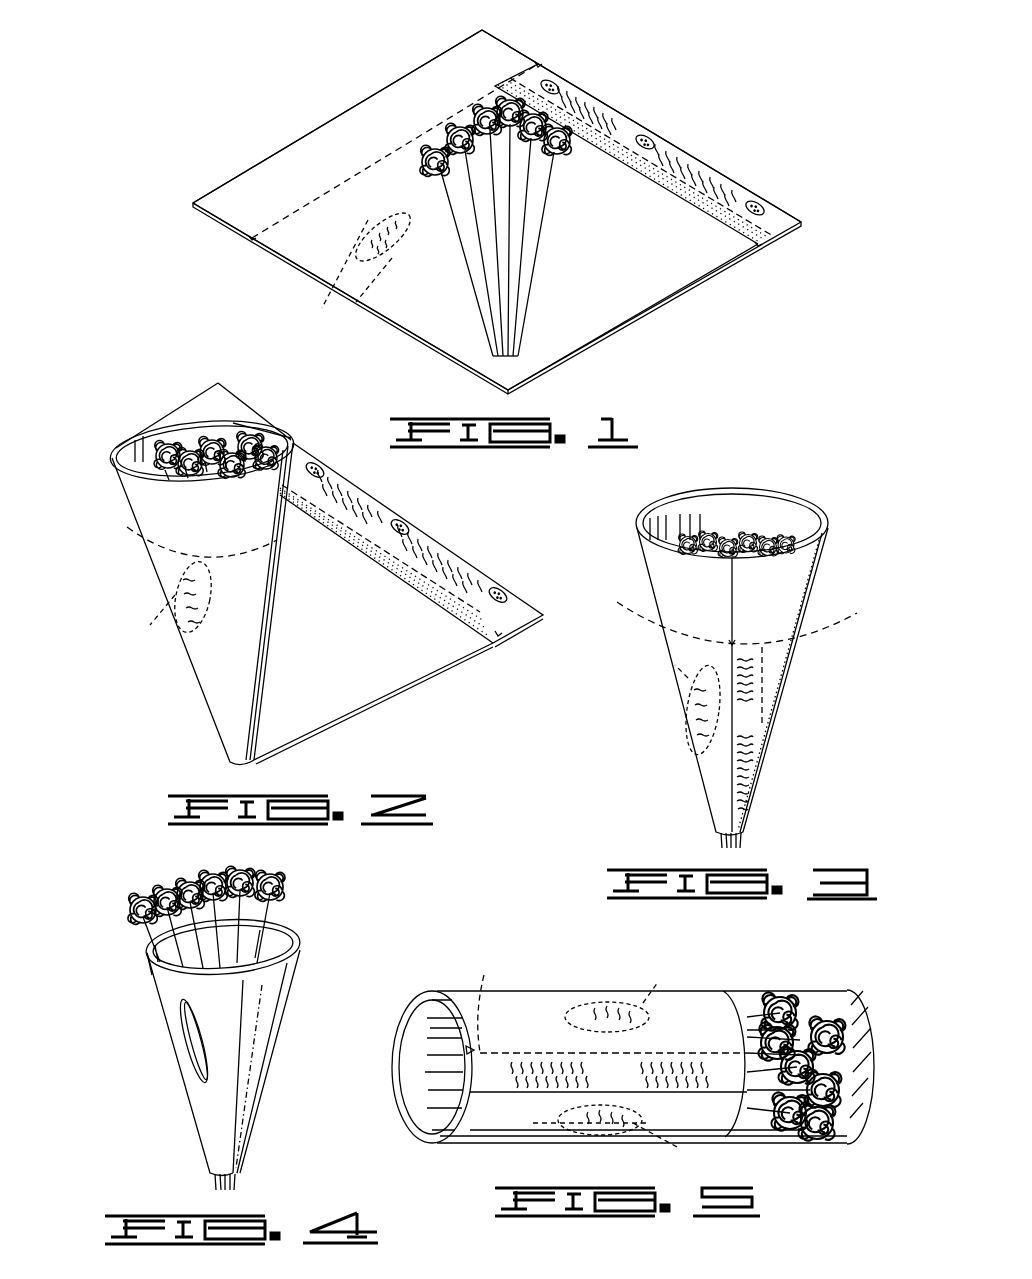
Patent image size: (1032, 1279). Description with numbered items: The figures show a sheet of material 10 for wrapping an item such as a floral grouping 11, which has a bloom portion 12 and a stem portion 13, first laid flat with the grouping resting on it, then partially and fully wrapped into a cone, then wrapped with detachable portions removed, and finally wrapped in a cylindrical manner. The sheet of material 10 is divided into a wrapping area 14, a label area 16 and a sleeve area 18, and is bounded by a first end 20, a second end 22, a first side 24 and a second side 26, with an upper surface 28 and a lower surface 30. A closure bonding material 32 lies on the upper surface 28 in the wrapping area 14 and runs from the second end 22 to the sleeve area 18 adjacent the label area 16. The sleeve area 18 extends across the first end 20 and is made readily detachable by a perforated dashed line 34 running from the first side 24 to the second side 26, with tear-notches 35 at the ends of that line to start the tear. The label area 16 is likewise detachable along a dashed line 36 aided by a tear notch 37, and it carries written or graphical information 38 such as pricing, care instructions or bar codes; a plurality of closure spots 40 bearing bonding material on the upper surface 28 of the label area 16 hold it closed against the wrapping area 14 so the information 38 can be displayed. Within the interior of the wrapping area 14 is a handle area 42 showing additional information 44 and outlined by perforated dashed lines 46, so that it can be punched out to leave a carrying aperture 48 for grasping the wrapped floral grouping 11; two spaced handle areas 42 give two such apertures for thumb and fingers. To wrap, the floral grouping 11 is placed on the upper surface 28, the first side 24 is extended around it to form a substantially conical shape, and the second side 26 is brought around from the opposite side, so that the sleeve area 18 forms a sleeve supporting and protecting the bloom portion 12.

In FIG. 1, the sheet of material 10 is at (174, 181).
In FIG. 2, the sheet of material 10 is at (116, 423).
In FIG. 3, the sheet of material 10 is at (676, 481).
In FIG. 4, the sheet of material 10 is at (308, 927).
In FIG. 5, the sheet of material 10 is at (540, 946).
In FIG. 1, the floral grouping 11 is at (404, 164).
In FIG. 2, the floral grouping 11 is at (212, 421).
In FIG. 3, the floral grouping 11 is at (767, 526).
In FIG. 4, the floral grouping 11 is at (297, 881).
In FIG. 5, the floral grouping 11 is at (778, 1063).
In FIG. 1, the bloom portion 12 is at (461, 108).
In FIG. 2, the bloom portion 12 is at (184, 433).
In FIG. 3, the bloom portion 12 is at (722, 523).
In FIG. 4, the bloom portion 12 is at (176, 873).
In FIG. 5, the bloom portion 12 is at (803, 998).
In FIG. 1, the stem portion 13 is at (449, 282).
In FIG. 3, the stem portion 13 is at (750, 838).
In FIG. 4, the stem portion 13 is at (206, 1177).
In FIG. 5, the stem portion 13 is at (432, 1092).
In FIG. 1, the wrapping area 14 is at (590, 265).
In FIG. 2, the wrapping area 14 is at (332, 655).
In FIG. 4, the wrapping area 14 is at (242, 963).
In FIG. 5, the wrapping area 14 is at (413, 1045).
In FIG. 1, the label area 16 is at (655, 136).
In FIG. 2, the label area 16 is at (395, 520).
In FIG. 3, the label area 16 is at (745, 720).
In FIG. 1, the sleeve area 18 is at (497, 55).
In FIG. 2, the sleeve area 18 is at (215, 405).
In FIG. 3, the sleeve area 18 is at (773, 588).
In FIG. 5, the sleeve area 18 is at (843, 1010).
In FIG. 1, the first end 20 is at (290, 150).
In FIG. 5, the first end 20 is at (873, 1040).
In FIG. 1, the second end 22 is at (555, 337).
In FIG. 5, the second end 22 is at (405, 1087).
In FIG. 1, the first side 24 is at (341, 302).
In FIG. 1, the second side 26 is at (700, 163).
In FIG. 1, the upper surface 28 is at (366, 312).
In FIG. 2, the upper surface 28 is at (282, 720).
In FIG. 4, the upper surface 28 is at (266, 946).
In FIG. 5, the upper surface 28 is at (417, 1060).
In FIG. 1, the lower surface 30 is at (420, 312).
In FIG. 2, the lower surface 30 is at (212, 692).
In FIG. 4, the lower surface 30 is at (257, 1008).
In FIG. 5, the lower surface 30 is at (560, 1012).
In FIG. 1, the closure bonding material 32 is at (672, 200).
In FIG. 2, the closure bonding material 32 is at (533, 620).
In FIG. 1, the dashed line 34 is at (437, 124).
In FIG. 2, the dashed line 34 is at (175, 565).
In FIG. 3, the dashed line 34 is at (808, 622).
In FIG. 4, the dashed line 34 is at (150, 953).
In FIG. 5, the dashed line 34 is at (744, 994).
In FIG. 1, the tear-notches 35 is at (541, 66).
In FIG. 3, the tear-notches 35 is at (735, 642).
In FIG. 1, the dashed line 36 is at (660, 125).
In FIG. 2, the dashed line 36 is at (505, 585).
In FIG. 3, the dashed line 36 is at (790, 718).
In FIG. 4, the dashed line 36 is at (237, 1100).
In FIG. 5, the dashed line 36 is at (484, 985).
In FIG. 1, the tear notch 37 is at (767, 243).
In FIG. 2, the tear notch 37 is at (500, 640).
In FIG. 5, the tear notch 37 is at (470, 1000).
In FIG. 1, the information 38 is at (600, 110).
In FIG. 2, the information 38 is at (355, 495).
In FIG. 3, the information 38 is at (752, 682).
In FIG. 5, the information 38 is at (533, 1068).
In FIG. 1, the closure spots 40 is at (556, 86).
In FIG. 2, the closure spots 40 is at (313, 462).
In FIG. 1, the handle area 42 is at (345, 237).
In FIG. 2, the handle area 42 is at (186, 598).
In FIG. 3, the handle area 42 is at (702, 680).
In FIG. 5, the handle area 42 is at (595, 1013).
In FIG. 1, the additional information 44 is at (342, 257).
In FIG. 2, the additional information 44 is at (186, 622).
In FIG. 3, the additional information 44 is at (705, 715).
In FIG. 5, the additional information 44 is at (623, 1012).
In FIG. 1, the dashed lines 46 is at (334, 297).
In FIG. 2, the dashed lines 46 is at (175, 595).
In FIG. 3, the dashed lines 46 is at (688, 678).
In FIG. 5, the dashed lines 46 is at (650, 992).
In FIG. 4, the carrying aperture 48 is at (180, 1020).